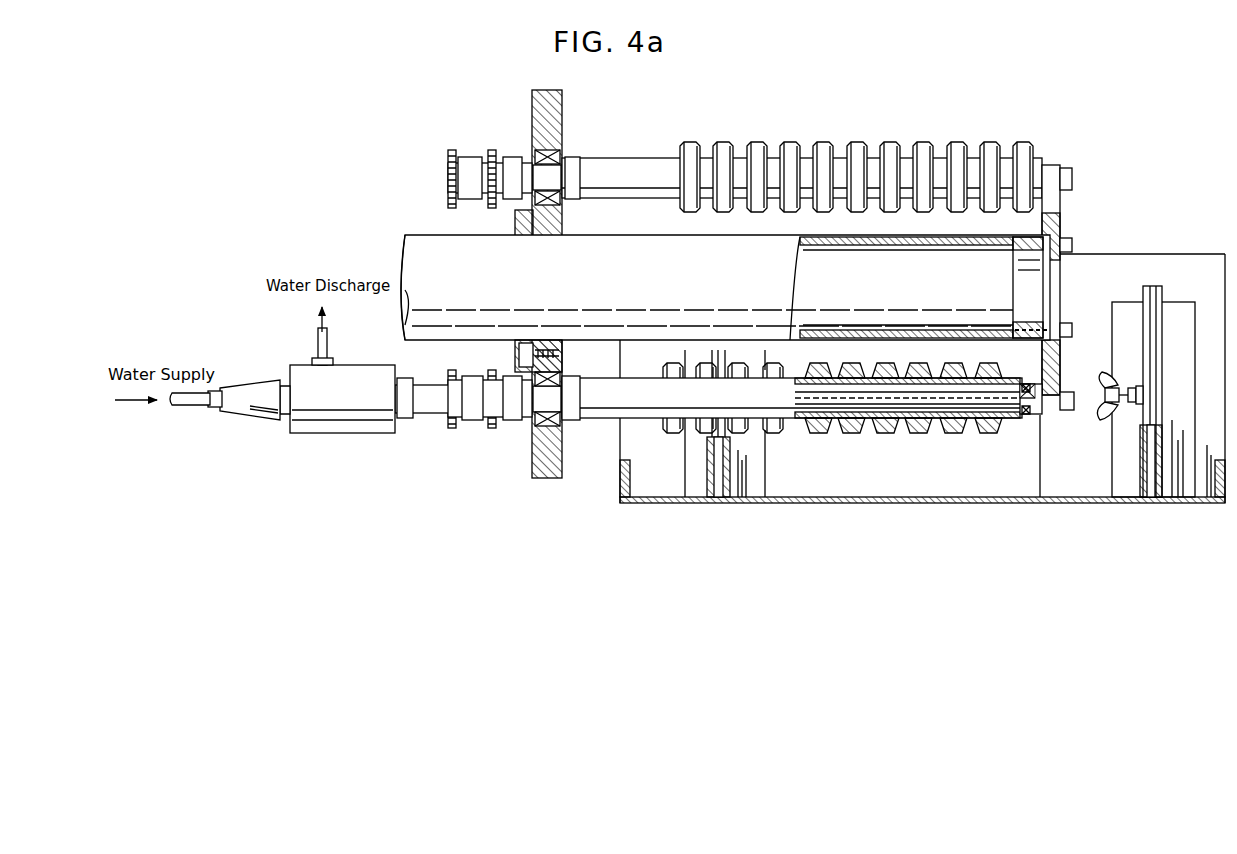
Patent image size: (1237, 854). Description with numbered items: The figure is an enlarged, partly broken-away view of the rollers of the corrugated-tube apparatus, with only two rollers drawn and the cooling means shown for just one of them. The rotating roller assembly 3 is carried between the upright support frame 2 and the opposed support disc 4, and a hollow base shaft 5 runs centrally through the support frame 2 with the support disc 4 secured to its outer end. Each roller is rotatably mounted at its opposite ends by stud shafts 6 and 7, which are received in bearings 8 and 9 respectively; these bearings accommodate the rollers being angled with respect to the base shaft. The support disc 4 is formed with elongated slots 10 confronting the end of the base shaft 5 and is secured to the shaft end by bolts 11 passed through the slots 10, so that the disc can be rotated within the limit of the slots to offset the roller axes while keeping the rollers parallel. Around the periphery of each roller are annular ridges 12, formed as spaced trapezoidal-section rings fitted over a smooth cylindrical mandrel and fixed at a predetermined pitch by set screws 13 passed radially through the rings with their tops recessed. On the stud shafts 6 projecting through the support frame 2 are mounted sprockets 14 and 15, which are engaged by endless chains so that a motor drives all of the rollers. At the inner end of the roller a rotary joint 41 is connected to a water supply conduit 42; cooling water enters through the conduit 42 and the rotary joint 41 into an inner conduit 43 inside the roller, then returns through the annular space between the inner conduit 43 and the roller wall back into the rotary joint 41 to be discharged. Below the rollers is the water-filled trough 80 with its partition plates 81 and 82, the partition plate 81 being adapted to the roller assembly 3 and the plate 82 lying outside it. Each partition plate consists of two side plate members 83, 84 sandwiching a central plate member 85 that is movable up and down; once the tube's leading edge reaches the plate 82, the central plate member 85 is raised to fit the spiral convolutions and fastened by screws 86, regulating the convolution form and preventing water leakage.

The support frame 2 is at (540, 470).
The roller assembly 3 is at (738, 142).
The support disc 4 is at (1060, 180).
The base shaft 5 is at (625, 291).
The stud shaft 6 is at (558, 178).
The stud shaft 7 is at (1038, 165).
The bearing 8 is at (555, 160).
The bearing 9 is at (1034, 416).
The elongated slot 10 is at (1029, 287).
The bolt 11 is at (1072, 245).
The annular ridge 12 is at (888, 150).
The set screw 13 is at (884, 434).
The sprocket 14 is at (452, 150).
The sprocket 15 is at (492, 150).
The rotary joint 41 is at (323, 434).
The water supply conduit 42 is at (188, 408).
The inner conduit 43 is at (988, 422).
The trough 80 is at (920, 512).
The partition plate 81 is at (685, 447).
The partition plate 82 is at (1136, 433).
The side plate member 83 is at (712, 477).
The side plate member 84 is at (726, 474).
The central plate member 85 is at (719, 470).
The screw 86 is at (1107, 386).